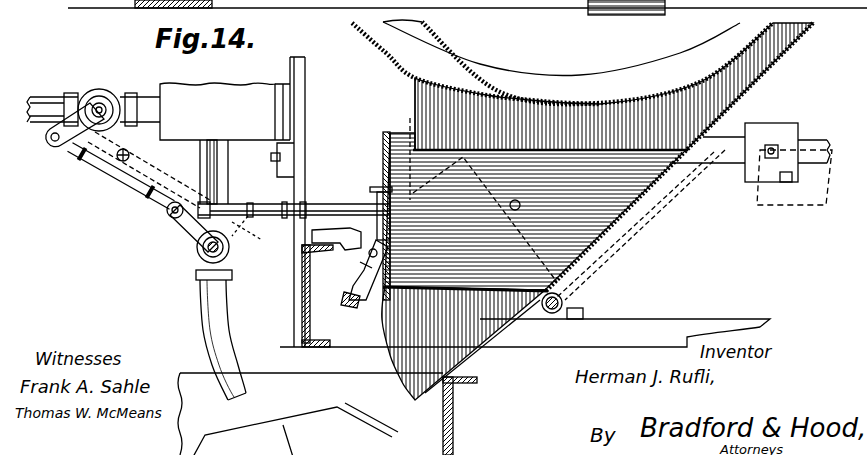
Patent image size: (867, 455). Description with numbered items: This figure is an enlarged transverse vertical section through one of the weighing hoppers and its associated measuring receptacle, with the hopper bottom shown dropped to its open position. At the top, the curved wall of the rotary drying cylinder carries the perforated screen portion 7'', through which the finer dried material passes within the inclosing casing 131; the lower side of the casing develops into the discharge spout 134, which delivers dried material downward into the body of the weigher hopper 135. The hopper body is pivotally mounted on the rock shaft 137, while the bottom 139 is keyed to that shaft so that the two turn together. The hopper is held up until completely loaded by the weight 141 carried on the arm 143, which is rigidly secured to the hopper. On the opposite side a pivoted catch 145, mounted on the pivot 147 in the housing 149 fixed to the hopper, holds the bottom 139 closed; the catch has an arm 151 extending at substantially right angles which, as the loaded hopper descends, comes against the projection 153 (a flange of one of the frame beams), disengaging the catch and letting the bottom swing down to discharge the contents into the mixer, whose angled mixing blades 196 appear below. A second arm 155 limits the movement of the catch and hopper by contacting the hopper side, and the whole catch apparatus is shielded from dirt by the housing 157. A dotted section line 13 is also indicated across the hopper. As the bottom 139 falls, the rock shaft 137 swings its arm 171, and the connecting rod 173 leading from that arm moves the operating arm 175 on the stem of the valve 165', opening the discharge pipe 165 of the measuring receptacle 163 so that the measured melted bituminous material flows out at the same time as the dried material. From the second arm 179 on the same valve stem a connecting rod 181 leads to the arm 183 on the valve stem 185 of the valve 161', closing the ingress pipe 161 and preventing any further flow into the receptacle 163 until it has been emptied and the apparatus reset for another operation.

The ingress pipe 161 is at (93, 83).
The arm 183 is at (60, 93).
The valve 161' is at (105, 87).
The valve stem 185 is at (113, 97).
The measuring receptacle 163 is at (225, 130).
The connecting rod 173 is at (271, 205).
The second arm 179 is at (240, 228).
The connecting rod 181 is at (117, 168).
The operating arm 175 is at (182, 228).
The valve 165' is at (161, 255).
The discharge pipe 165 is at (173, 335).
The projection 153 is at (300, 262).
The weigher hopper 135 is at (390, 133).
The housing 157 is at (379, 182).
The second arm 155 is at (372, 190).
The arm 151 is at (327, 228).
The pivot 147 is at (366, 258).
The housing 149 is at (372, 272).
The pivoted catch 145 is at (349, 298).
The casing 131 is at (368, 40).
The screen-like portion 7'' is at (578, 62).
The discharge spout 134 is at (413, 85).
The arm 171 is at (534, 204).
The frame bar 13 is at (623, 225).
The bottom 139 is at (477, 353).
The rock shaft 137 is at (563, 305).
The arm 143 is at (720, 167).
The weight 141 is at (783, 133).
The mixing blades 196 is at (334, 419).